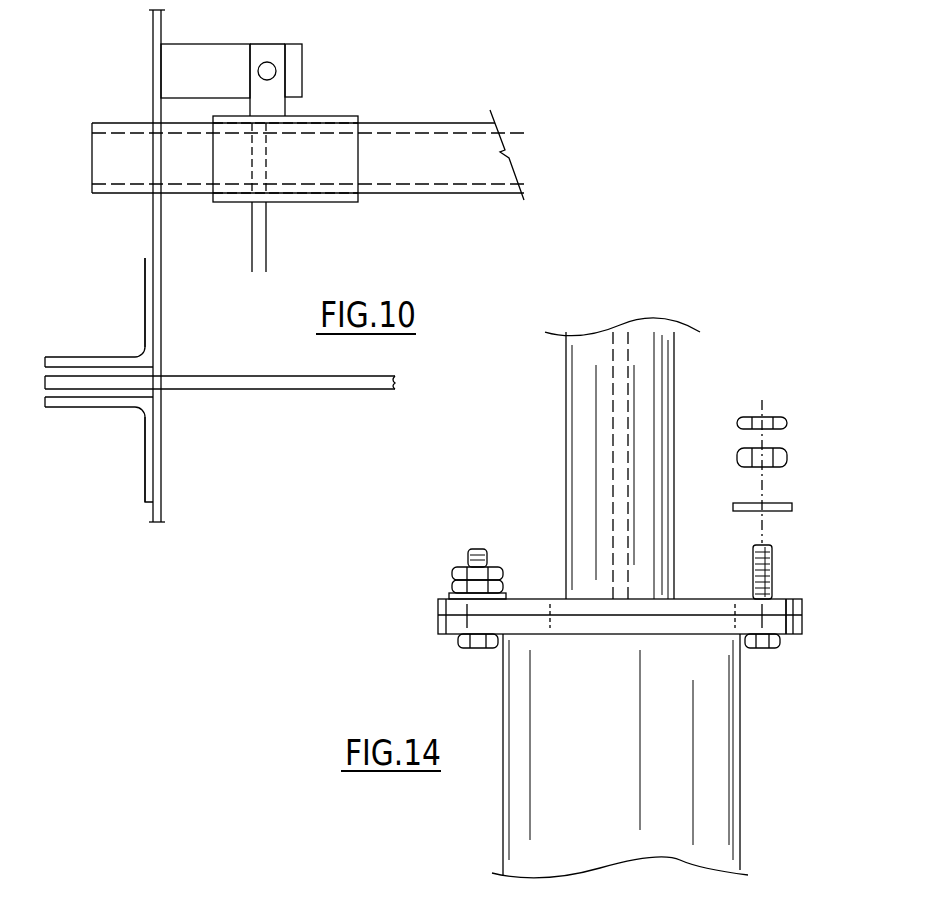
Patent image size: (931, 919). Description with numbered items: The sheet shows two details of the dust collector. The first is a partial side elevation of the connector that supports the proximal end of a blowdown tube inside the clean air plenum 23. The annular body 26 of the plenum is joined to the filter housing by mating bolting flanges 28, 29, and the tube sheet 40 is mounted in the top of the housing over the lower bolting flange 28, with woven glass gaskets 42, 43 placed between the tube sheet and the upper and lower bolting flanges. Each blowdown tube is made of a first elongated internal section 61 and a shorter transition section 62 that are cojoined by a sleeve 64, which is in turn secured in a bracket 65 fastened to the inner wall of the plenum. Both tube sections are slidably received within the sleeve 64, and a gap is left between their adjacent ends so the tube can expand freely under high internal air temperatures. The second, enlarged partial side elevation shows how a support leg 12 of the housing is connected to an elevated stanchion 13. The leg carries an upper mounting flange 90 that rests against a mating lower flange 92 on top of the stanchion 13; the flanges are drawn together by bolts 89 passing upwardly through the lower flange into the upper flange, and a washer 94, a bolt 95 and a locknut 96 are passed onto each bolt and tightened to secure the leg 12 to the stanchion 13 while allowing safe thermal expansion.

In FIG. 10, the annular body 26 is at (152, 28).
In FIG. 10, the clean air plenum 23 is at (152, 225).
In FIG. 10, the first elongated internal section 61 is at (410, 123).
In FIG. 10, the sleeve 64 is at (342, 115).
In FIG. 10, the transition section 62 is at (180, 195).
In FIG. 10, the bracket 65 is at (276, 44).
In FIG. 10, the lower bolting flange 28 is at (85, 357).
In FIG. 10, the woven glass gasket 42 is at (121, 357).
In FIG. 10, the tube sheet 40 is at (276, 392).
In FIG. 10, the upper bolting flange 29 is at (80, 407).
In FIG. 10, the woven glass gasket 43 is at (122, 407).
In FIG. 14, the support leg 12 is at (675, 382).
In FIG. 14, the lower flange 92 is at (592, 636).
In FIG. 14, the stanchion 13 is at (720, 810).
In FIG. 14, the bolt 89 is at (478, 547).
In FIG. 14, the locknut 96 is at (782, 414).
In FIG. 14, the bolt 95 is at (783, 448).
In FIG. 14, the washer 94 is at (782, 505).
In FIG. 14, the upper mounting flange 90 is at (852, 572).